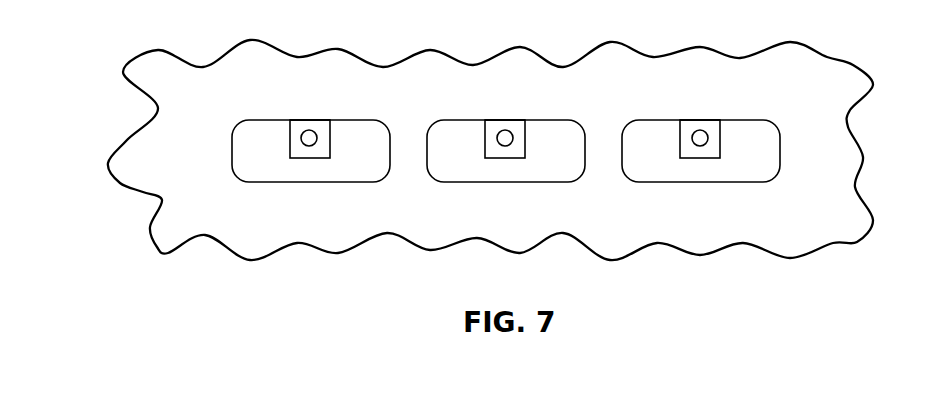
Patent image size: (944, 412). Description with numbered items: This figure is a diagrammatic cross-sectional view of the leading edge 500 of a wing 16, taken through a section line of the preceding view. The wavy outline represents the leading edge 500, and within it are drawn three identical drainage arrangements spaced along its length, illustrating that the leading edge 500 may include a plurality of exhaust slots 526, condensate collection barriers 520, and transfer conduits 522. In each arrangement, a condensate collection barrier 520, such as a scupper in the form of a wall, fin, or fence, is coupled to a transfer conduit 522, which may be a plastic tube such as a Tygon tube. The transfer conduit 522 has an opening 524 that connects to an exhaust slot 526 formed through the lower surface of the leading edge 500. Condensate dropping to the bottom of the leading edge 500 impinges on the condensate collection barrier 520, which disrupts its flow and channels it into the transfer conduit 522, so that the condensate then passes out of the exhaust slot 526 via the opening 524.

The leading edge 500 is at (459, 150).
The wing 16 is at (102, 189).
The condensate collection barrier 520 is at (333, 135).
The transfer conduit 522 is at (312, 119).
The opening 524 is at (311, 142).
The exhaust slot 526 is at (255, 170).